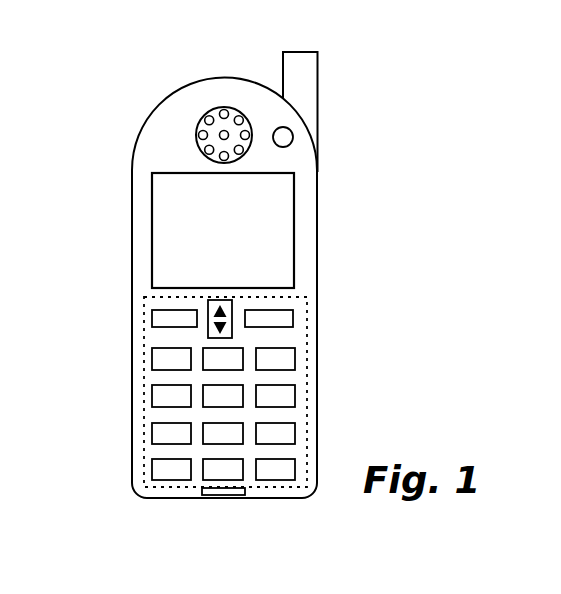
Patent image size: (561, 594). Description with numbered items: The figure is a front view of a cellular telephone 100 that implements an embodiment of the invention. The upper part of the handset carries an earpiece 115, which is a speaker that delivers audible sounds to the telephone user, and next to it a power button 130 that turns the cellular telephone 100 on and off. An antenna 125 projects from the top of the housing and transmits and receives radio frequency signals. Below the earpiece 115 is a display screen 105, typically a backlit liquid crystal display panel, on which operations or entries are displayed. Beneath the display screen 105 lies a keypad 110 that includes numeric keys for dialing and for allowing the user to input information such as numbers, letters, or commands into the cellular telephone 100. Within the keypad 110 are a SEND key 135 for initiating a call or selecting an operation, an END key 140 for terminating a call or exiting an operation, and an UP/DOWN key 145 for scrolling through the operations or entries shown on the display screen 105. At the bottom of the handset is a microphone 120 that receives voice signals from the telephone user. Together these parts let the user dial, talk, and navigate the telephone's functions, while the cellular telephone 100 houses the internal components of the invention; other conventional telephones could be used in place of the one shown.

The cellular telephone 100 is at (148, 113).
The display screen 105 is at (150, 243).
The keypad 110 is at (138, 438).
The earpiece 115 is at (214, 110).
The microphone 120 is at (245, 495).
The antenna 125 is at (315, 80).
The power button 130 is at (287, 138).
The SEND key 135 is at (150, 318).
The END key 140 is at (276, 308).
The UP/DOWN key 145 is at (233, 329).